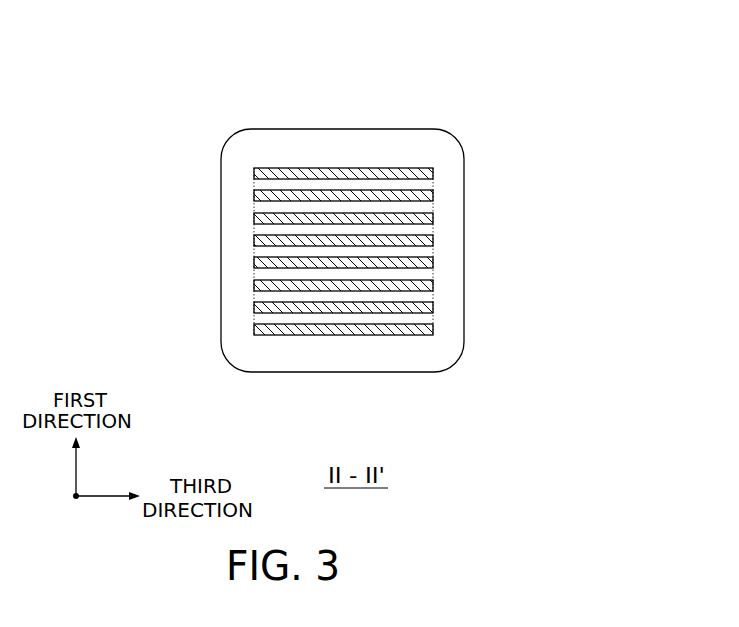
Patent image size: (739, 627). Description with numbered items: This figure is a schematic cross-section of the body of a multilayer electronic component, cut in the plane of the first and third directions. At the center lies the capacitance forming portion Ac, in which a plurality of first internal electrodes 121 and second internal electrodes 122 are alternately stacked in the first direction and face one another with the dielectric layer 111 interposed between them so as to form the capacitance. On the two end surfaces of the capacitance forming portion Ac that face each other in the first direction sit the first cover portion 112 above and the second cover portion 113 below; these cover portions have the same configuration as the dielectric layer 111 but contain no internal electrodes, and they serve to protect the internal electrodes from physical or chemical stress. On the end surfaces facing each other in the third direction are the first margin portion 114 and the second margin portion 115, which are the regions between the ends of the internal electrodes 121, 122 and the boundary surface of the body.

The first cover portion 112 is at (342, 133).
The second cover portion 113 is at (340, 361).
The first margin portion 114 is at (233, 278).
The second margin portion 115 is at (458, 280).
The first internal electrode 121 is at (433, 168).
The second internal electrode 122 is at (433, 191).
The dielectric layer 111 is at (432, 180).
The capacitance forming portion Ac is at (255, 253).